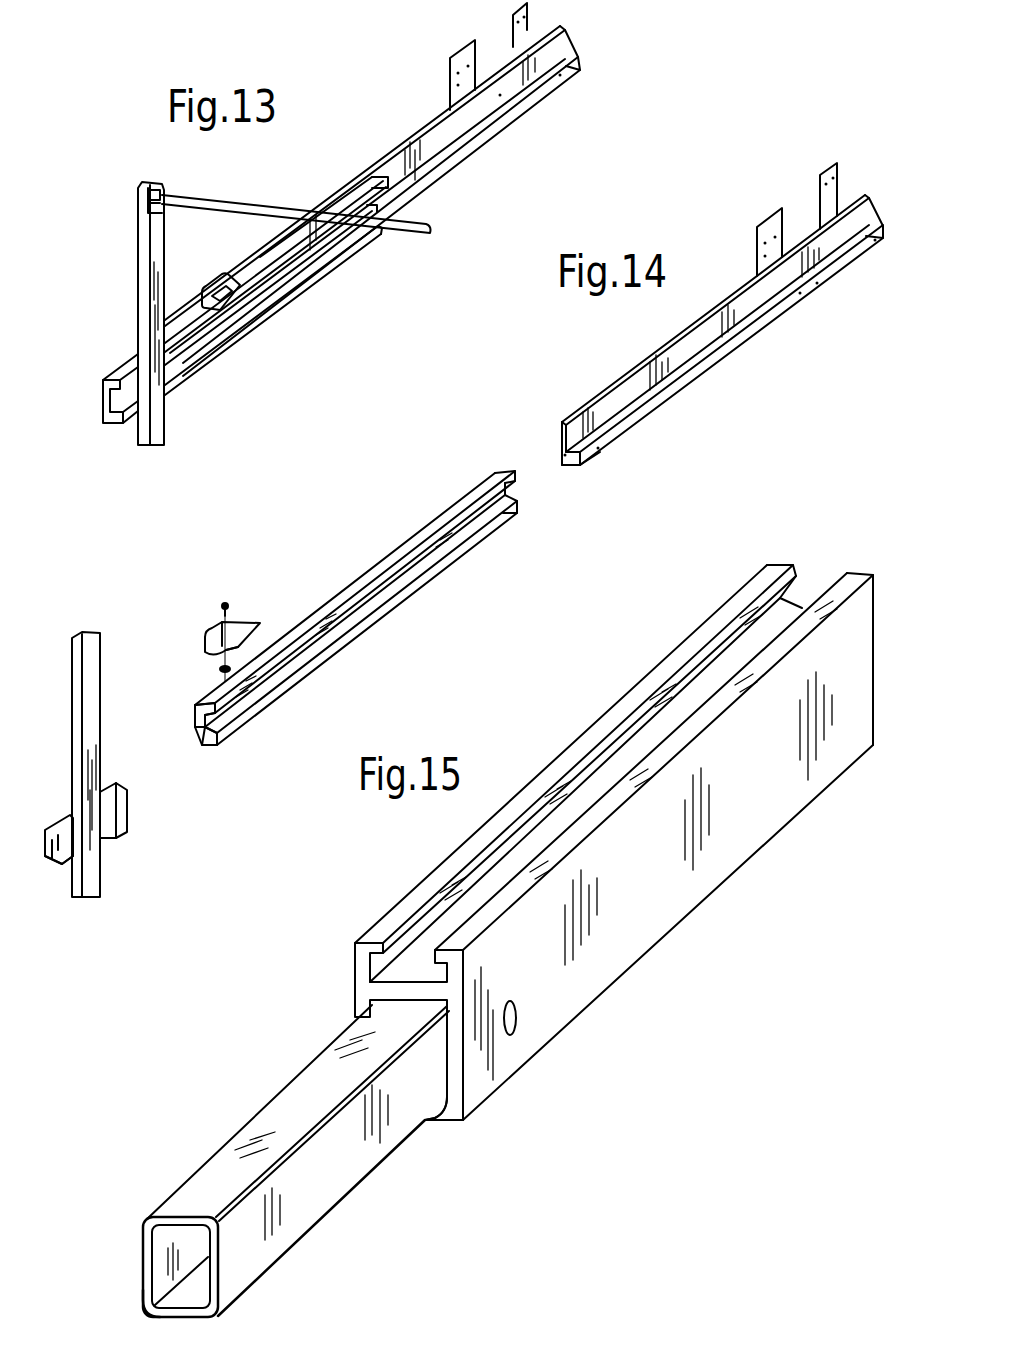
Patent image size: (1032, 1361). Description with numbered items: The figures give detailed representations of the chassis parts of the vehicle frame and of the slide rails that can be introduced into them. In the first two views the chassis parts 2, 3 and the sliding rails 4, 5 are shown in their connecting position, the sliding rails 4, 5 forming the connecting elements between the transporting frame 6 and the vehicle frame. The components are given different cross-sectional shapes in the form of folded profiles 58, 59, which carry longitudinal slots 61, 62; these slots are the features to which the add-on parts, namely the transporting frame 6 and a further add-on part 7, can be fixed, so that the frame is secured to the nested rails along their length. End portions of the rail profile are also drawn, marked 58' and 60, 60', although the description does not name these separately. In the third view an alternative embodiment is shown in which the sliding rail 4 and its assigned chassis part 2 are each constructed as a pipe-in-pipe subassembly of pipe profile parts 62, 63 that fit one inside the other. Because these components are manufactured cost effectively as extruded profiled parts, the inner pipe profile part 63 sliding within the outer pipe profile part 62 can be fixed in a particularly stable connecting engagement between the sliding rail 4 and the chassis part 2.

In FIG. 13, the chassis part 2 is at (351, 260).
In FIG. 14, the chassis part 2 is at (572, 399).
In FIG. 15, the chassis part 2 is at (700, 877).
In FIG. 13, the chassis part 3 is at (359, 271).
In FIG. 14, the chassis part 3 is at (558, 398).
In FIG. 13, the sliding rail 4 is at (268, 313).
In FIG. 15, the sliding rail 4 is at (283, 1103).
In FIG. 13, the sliding rail 5 is at (313, 589).
In FIG. 13, the transporting frame 6 is at (127, 265).
In FIG. 13, the add-on part 7 is at (232, 288).
In FIG. 13, the folded profile 58 is at (150, 576).
In FIG. 13, the end piece (variant) 58' is at (77, 764).
In FIG. 14, the folded profile 59 is at (561, 443).
In FIG. 13, the bottom flange of end piece 60 is at (216, 767).
In FIG. 13, the bottom flange (variant) 60' is at (56, 903).
In FIG. 14, the longitudinal slot 61 is at (617, 405).
In FIG. 15, the longitudinal slot / pipe profile part 62 is at (450, 1082).
In FIG. 15, the pipe profile part 63 is at (208, 1315).